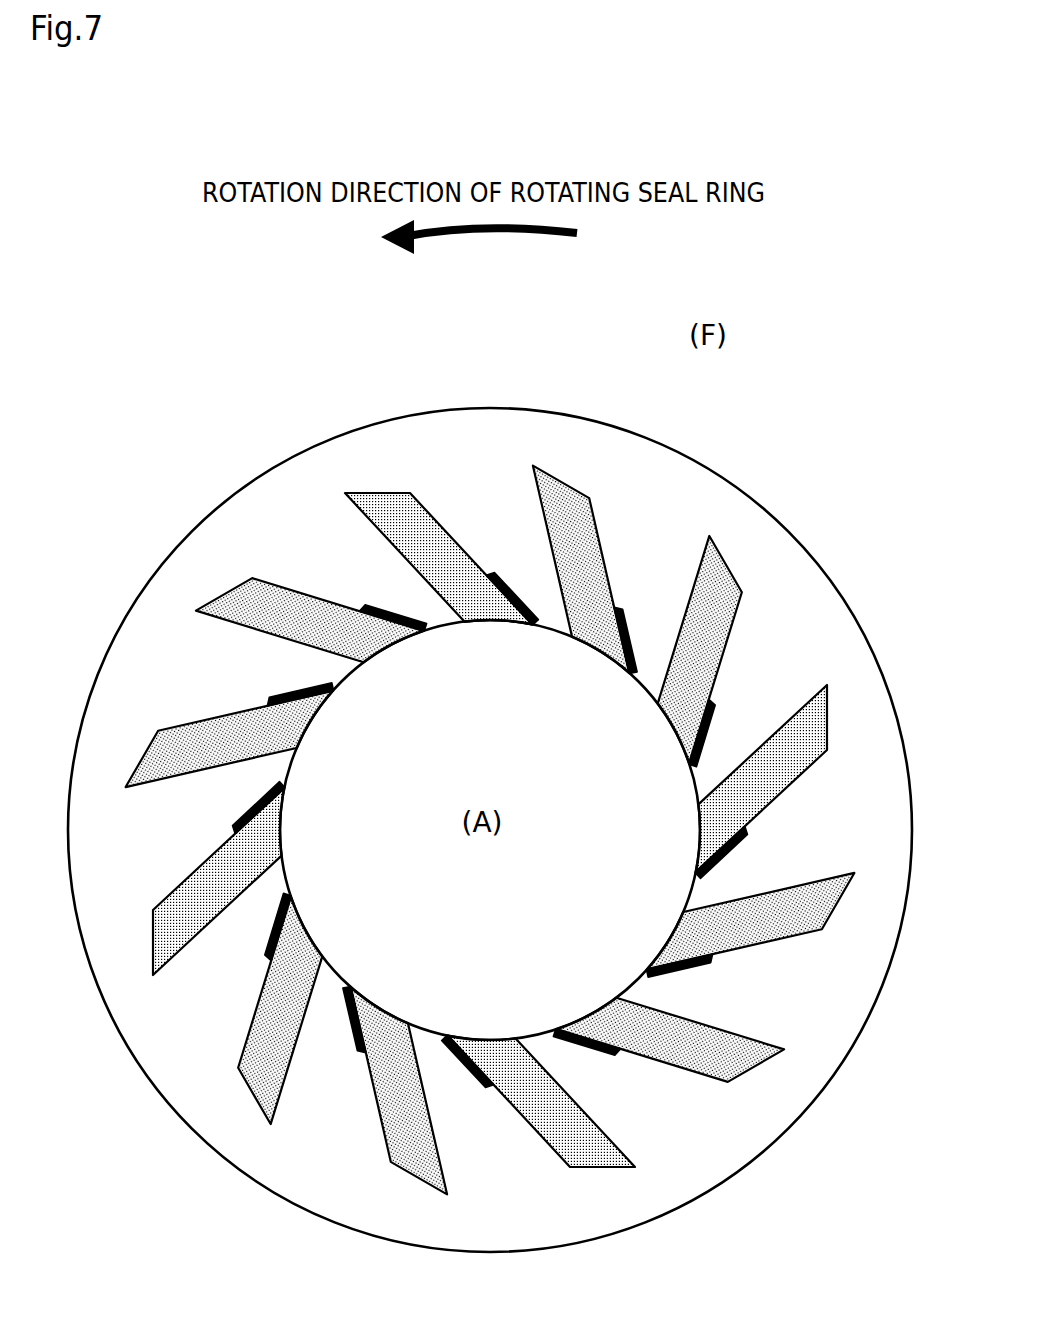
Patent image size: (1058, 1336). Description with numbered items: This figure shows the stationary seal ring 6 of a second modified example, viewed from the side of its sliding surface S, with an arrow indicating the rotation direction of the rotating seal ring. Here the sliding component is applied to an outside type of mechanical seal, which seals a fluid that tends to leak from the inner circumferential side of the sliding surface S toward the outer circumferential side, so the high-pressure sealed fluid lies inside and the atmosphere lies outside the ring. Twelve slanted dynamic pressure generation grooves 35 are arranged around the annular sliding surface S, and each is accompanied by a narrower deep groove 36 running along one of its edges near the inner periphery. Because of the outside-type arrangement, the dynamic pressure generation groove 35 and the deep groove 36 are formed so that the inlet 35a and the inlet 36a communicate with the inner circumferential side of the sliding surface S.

The stationary seal ring 6 is at (716, 437).
The dynamic pressure generation groove 35 is at (389, 510).
The deep groove 36 is at (503, 588).
The inlet 35a is at (487, 625).
The inlet 36a is at (532, 627).
The sliding surface S is at (584, 446).